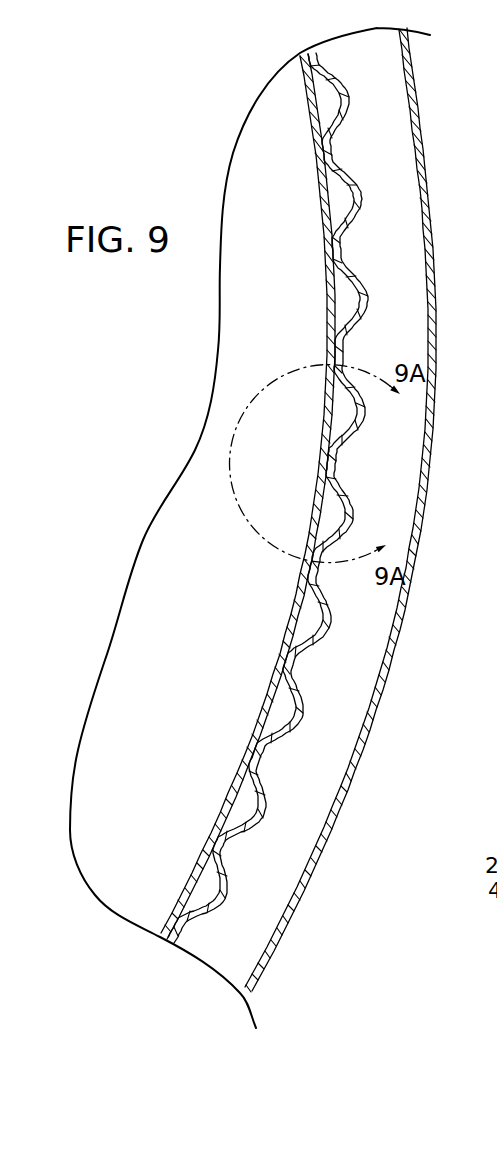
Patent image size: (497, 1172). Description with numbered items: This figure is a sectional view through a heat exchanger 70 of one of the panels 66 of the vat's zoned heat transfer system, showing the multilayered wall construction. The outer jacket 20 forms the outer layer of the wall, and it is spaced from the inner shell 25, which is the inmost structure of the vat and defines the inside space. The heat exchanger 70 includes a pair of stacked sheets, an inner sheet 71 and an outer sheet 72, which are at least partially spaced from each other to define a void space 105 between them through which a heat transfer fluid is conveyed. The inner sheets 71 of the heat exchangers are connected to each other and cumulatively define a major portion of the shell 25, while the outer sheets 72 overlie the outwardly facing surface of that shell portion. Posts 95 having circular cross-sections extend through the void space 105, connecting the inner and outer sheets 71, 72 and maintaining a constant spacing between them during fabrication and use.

The outer jacket 20 is at (386, 708).
The inner shell 25 is at (302, 498).
The panel 66 is at (322, 252).
The heat exchanger 70 is at (302, 498).
The inner sheet 71 is at (330, 328).
The outer sheet 72 is at (276, 740).
The post 95 is at (333, 157).
The void space 105 is at (322, 103).